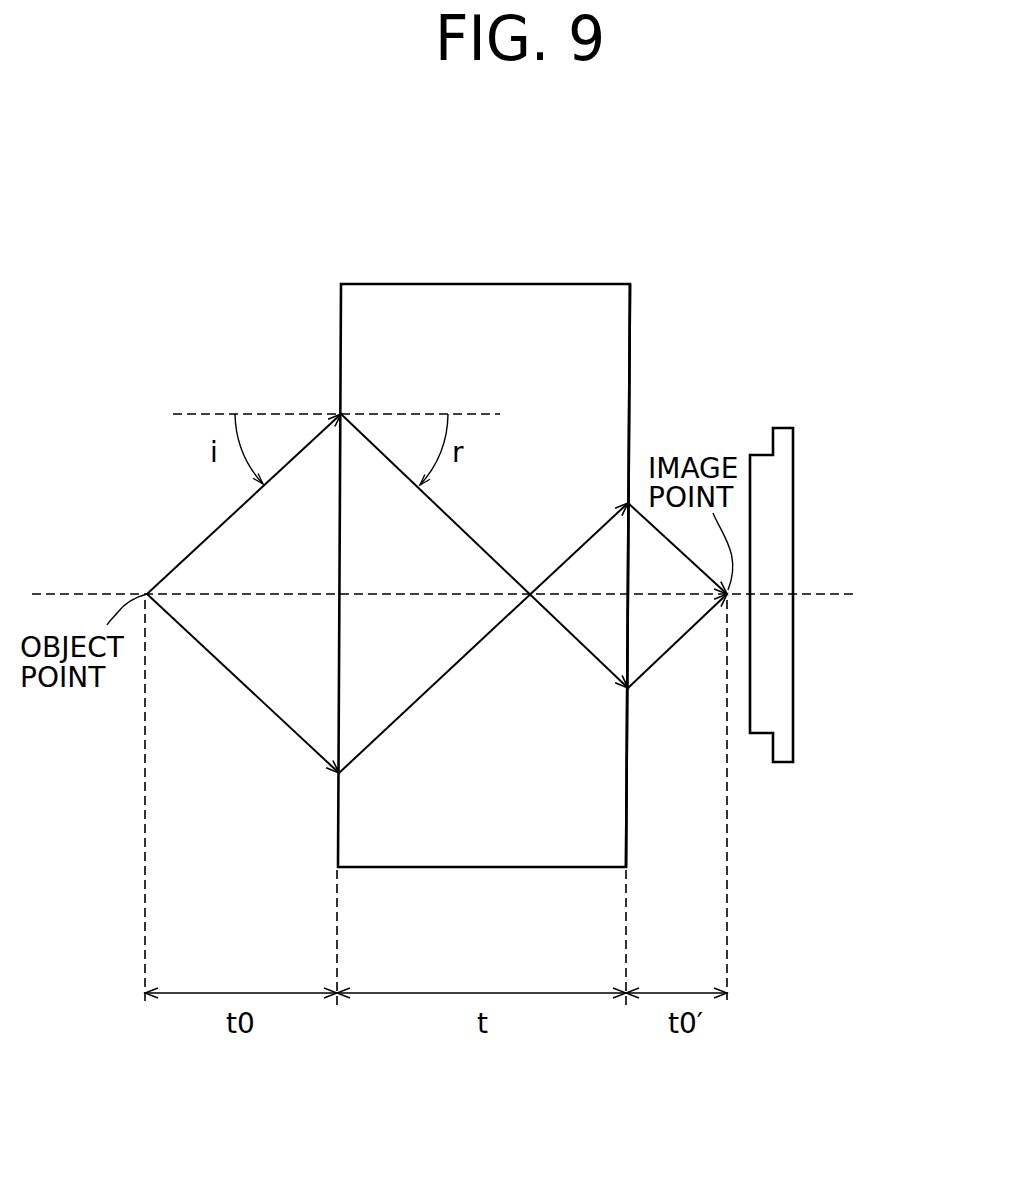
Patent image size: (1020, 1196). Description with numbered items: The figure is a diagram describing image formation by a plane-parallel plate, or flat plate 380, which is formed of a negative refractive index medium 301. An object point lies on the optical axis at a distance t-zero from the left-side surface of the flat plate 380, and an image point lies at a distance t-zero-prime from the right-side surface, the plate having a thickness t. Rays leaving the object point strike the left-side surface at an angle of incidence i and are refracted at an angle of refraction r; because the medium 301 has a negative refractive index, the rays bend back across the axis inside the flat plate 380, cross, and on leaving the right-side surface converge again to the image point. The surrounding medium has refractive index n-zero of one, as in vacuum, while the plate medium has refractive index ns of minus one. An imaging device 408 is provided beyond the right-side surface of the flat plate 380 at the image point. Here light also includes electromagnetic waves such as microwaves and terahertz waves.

The negative refractive index medium 301 is at (618, 307).
The plane-parallel plate (flat plate) 380 is at (630, 368).
The imaging device 408 is at (793, 722).